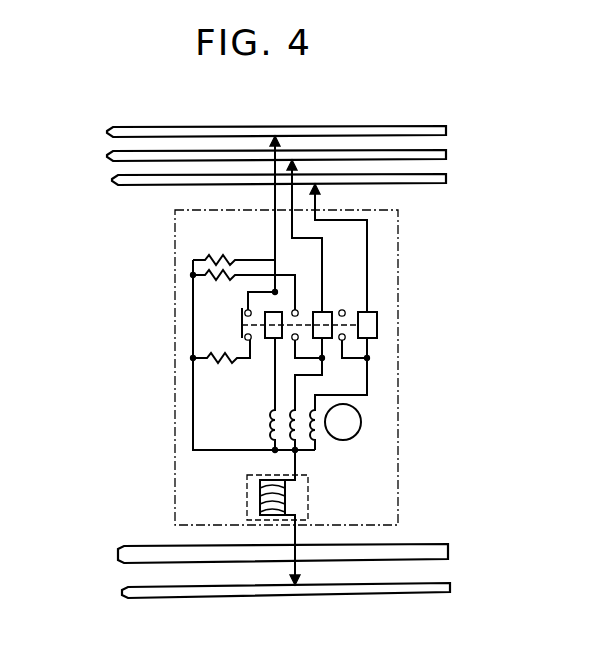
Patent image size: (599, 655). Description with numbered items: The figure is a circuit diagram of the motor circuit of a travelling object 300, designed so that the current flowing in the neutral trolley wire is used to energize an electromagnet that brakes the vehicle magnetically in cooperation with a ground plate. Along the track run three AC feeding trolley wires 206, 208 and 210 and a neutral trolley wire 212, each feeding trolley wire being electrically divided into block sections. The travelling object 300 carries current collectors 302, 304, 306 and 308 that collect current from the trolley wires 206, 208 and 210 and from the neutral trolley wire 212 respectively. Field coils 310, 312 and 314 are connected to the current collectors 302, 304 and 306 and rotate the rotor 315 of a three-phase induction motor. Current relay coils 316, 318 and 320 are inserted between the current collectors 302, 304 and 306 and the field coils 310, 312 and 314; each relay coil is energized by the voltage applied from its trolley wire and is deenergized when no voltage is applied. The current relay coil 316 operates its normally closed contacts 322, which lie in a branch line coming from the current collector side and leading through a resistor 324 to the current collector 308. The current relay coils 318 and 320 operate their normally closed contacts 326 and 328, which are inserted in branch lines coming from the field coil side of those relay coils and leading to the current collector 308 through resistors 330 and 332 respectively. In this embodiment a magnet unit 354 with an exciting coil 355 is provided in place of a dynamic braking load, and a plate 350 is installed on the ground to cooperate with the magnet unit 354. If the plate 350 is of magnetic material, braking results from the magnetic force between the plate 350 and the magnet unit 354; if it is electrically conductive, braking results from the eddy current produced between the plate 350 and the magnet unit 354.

The AC feeding trolley wire 206 is at (94, 125).
The AC feeding trolley wire 208 is at (94, 149).
The AC feeding trolley wire 210 is at (94, 173).
The neutral trolley wire 212 is at (197, 592).
The travelling object 300 is at (400, 252).
The current collector 302 is at (280, 142).
The current collector 304 is at (295, 160).
The current collector 306 is at (318, 186).
The current collector 308 is at (302, 581).
The field coil 310 is at (268, 433).
The field coil 312 is at (289, 413).
The field coil 314 is at (321, 438).
The rotor 315 is at (356, 431).
The current relay coil 316 is at (246, 307).
The current relay coil 318 is at (344, 375).
The current relay coil 320 is at (377, 327).
The normally closed contacts 322 is at (242, 318).
The resistor 324 is at (222, 367).
The normally closed contacts 326 is at (300, 322).
The normally closed contacts 328 is at (350, 312).
The resistor 330 is at (229, 270).
The resistor 332 is at (214, 260).
The plate 350 is at (176, 553).
The magnet unit 354 is at (247, 500).
The exciting coil 355 is at (286, 500).